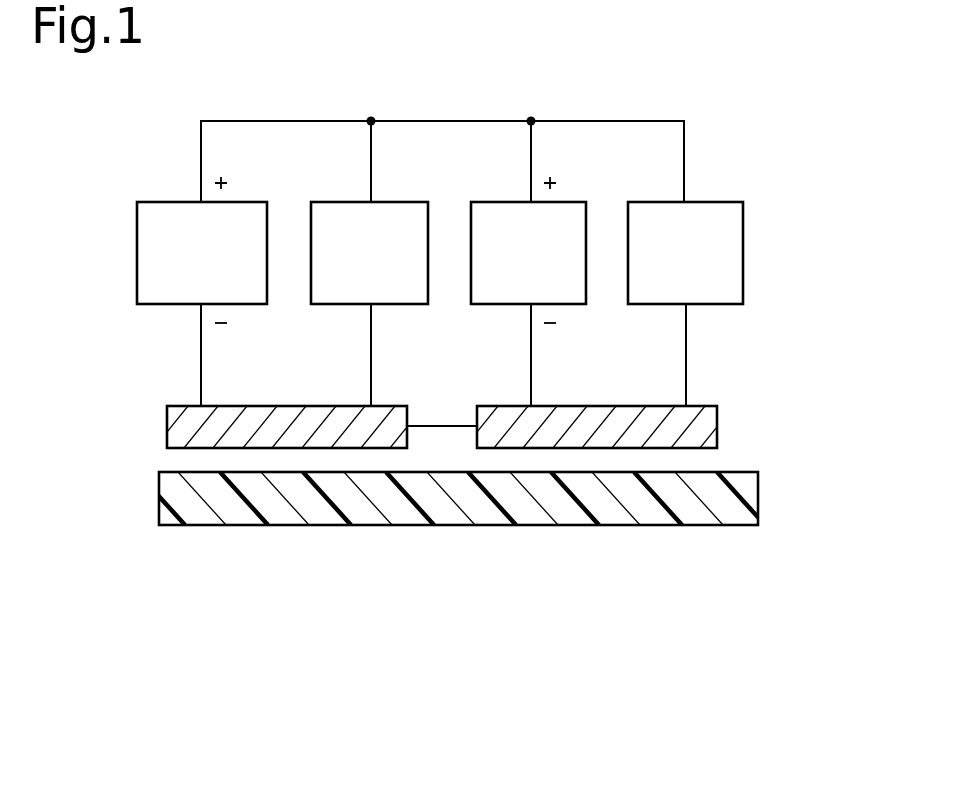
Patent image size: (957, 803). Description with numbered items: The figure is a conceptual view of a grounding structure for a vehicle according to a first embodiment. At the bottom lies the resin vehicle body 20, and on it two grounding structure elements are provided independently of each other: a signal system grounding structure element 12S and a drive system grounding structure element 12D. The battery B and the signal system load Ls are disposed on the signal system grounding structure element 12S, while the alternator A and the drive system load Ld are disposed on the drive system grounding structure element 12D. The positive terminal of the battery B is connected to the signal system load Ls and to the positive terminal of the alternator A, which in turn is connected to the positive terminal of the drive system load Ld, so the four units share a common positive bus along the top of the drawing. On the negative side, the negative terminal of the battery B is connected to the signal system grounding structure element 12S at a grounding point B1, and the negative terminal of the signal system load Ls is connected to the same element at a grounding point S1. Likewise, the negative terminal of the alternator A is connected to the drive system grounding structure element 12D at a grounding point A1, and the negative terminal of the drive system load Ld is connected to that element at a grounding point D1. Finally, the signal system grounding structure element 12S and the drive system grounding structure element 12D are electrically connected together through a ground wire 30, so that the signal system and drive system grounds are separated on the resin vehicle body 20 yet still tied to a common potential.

The battery B is at (165, 200).
The signal system load Ls is at (400, 200).
The alternator A is at (498, 200).
The drive system load Ld is at (718, 200).
The grounding point B1 is at (198, 404).
The grounding point S1 is at (369, 404).
The grounding point A1 is at (510, 404).
The grounding point D1 is at (683, 404).
The signal system grounding structure element 12S is at (397, 404).
The drive system grounding structure element 12D is at (712, 404).
The ground wire 30 is at (441, 424).
The resin vehicle body 20 is at (758, 490).